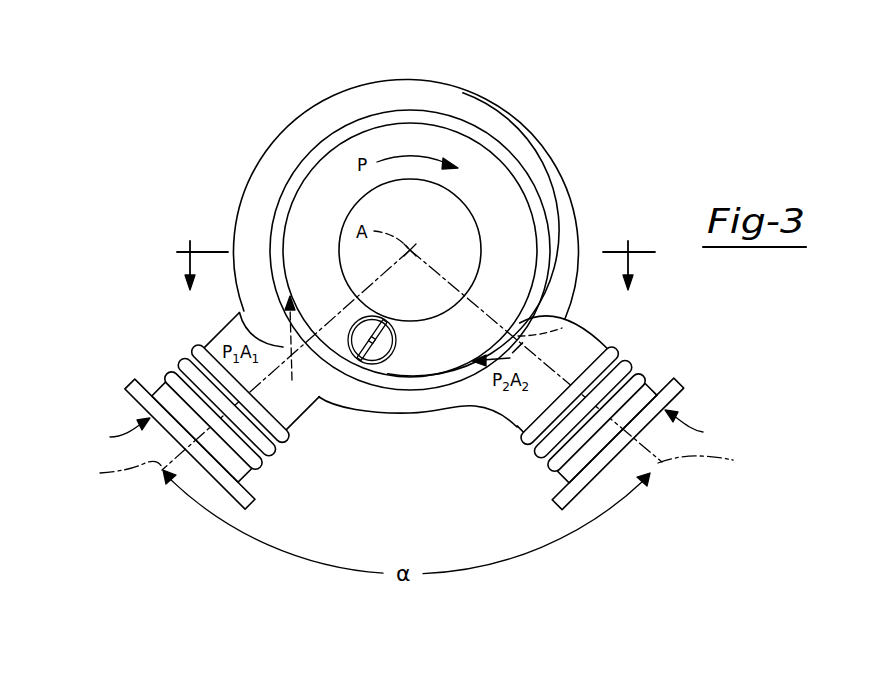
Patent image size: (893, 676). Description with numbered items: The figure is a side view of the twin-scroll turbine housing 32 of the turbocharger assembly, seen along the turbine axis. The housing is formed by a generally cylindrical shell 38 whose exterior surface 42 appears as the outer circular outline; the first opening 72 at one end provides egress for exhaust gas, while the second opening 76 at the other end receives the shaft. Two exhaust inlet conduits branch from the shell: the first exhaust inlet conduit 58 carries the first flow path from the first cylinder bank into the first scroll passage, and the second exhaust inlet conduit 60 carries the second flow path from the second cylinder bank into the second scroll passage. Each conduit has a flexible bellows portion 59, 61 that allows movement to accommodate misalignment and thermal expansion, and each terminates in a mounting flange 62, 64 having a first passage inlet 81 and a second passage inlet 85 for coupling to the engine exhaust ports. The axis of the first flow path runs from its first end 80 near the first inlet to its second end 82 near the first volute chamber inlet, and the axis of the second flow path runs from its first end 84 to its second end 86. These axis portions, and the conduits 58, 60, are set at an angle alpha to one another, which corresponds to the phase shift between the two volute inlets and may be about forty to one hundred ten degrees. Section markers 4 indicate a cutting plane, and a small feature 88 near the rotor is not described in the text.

The section line 4- 4 is at (416, 251).
The turbine housing 32 is at (606, 132).
The shell 38 is at (526, 119).
The exterior surface 42 is at (473, 86).
The first exhaust inlet conduit 58 is at (312, 425).
The flexible bellows portion 59 is at (186, 362).
The second exhaust inlet conduit 60 is at (597, 331).
The flexible bellows portion 61 is at (620, 358).
The flange 62 is at (127, 387).
The flange 64 is at (693, 378).
The first opening 72 is at (497, 258).
The second opening 76 is at (402, 221).
The first end of first axis 80 is at (238, 366).
The first passage inlet 81 is at (118, 432).
The second end of first axis 82 is at (238, 313).
The first end of second axis 84 is at (581, 360).
The second passage inlet 85 is at (695, 425).
The second end of second axis 86 is at (570, 327).
The valve 88 is at (381, 345).